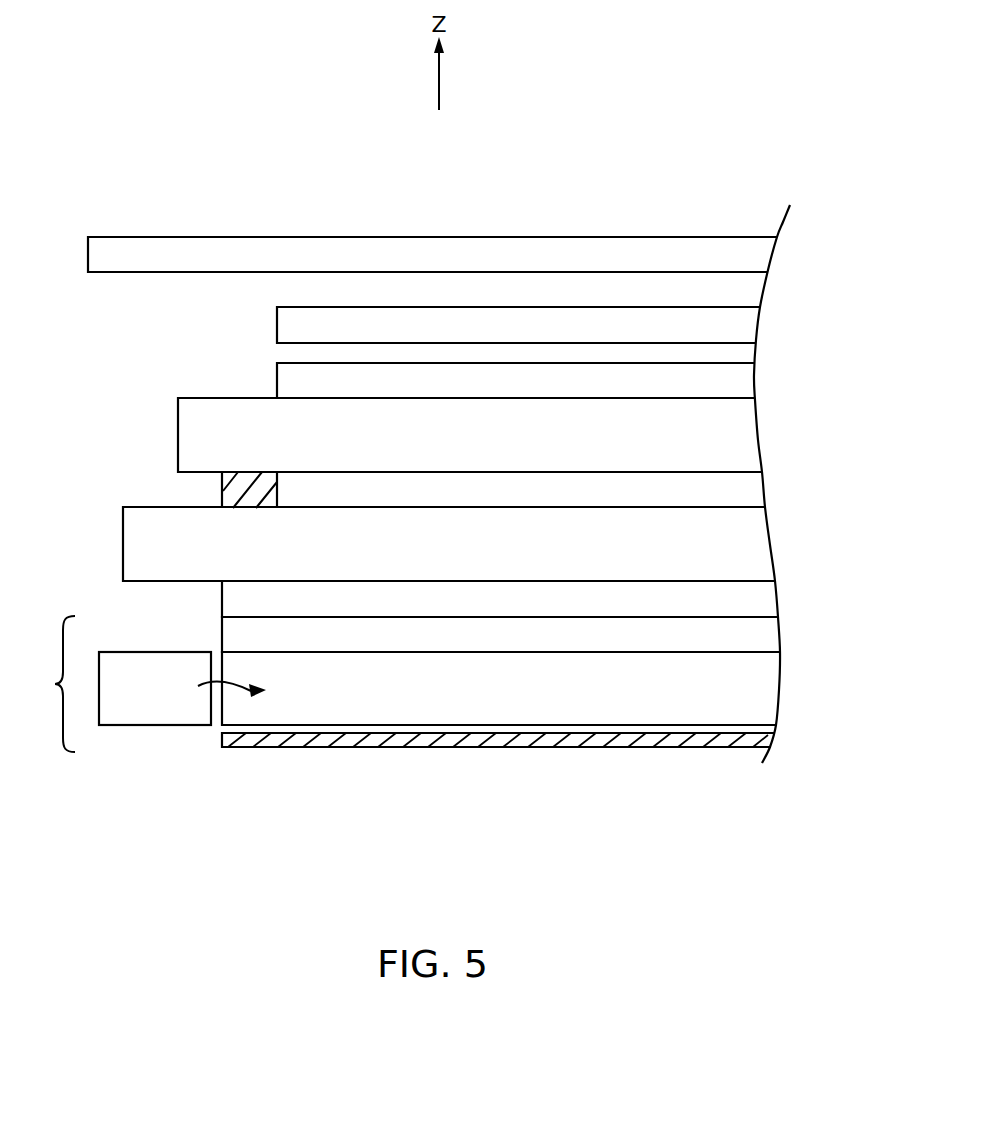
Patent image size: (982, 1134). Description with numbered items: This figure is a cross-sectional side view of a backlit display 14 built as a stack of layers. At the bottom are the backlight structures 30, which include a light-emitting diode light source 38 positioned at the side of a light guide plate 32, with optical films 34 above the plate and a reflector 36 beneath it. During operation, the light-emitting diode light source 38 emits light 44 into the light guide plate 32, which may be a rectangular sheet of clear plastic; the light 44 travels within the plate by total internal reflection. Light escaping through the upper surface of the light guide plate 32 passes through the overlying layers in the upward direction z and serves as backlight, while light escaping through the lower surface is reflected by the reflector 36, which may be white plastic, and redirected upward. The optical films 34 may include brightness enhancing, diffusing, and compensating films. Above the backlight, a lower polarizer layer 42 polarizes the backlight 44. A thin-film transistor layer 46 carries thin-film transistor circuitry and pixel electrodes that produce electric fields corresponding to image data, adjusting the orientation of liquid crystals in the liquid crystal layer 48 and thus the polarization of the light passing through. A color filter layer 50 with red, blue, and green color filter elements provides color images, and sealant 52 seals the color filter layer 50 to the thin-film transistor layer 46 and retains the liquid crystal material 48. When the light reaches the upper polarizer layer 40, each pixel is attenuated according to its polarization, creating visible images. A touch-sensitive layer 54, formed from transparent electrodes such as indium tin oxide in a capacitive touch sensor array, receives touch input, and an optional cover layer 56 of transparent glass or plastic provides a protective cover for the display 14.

The display 14 is at (684, 100).
The cover layer 56 is at (762, 252).
The touch-sensitive layer 54 is at (748, 324).
The upper polarizer layer 40 is at (746, 379).
The color filter layer 50 is at (747, 429).
The sealant 52 is at (222, 488).
The liquid crystal layer 48 is at (754, 486).
The thin-film transistor layer 46 is at (758, 534).
The lower polarizer layer 42 is at (768, 598).
The optical films 34 is at (770, 634).
The light guide plate 32 is at (770, 684).
The reflector 36 is at (527, 733).
The light-emitting diode light source 38 is at (163, 725).
The light 44 is at (240, 692).
The backlight structures 30 is at (50, 684).